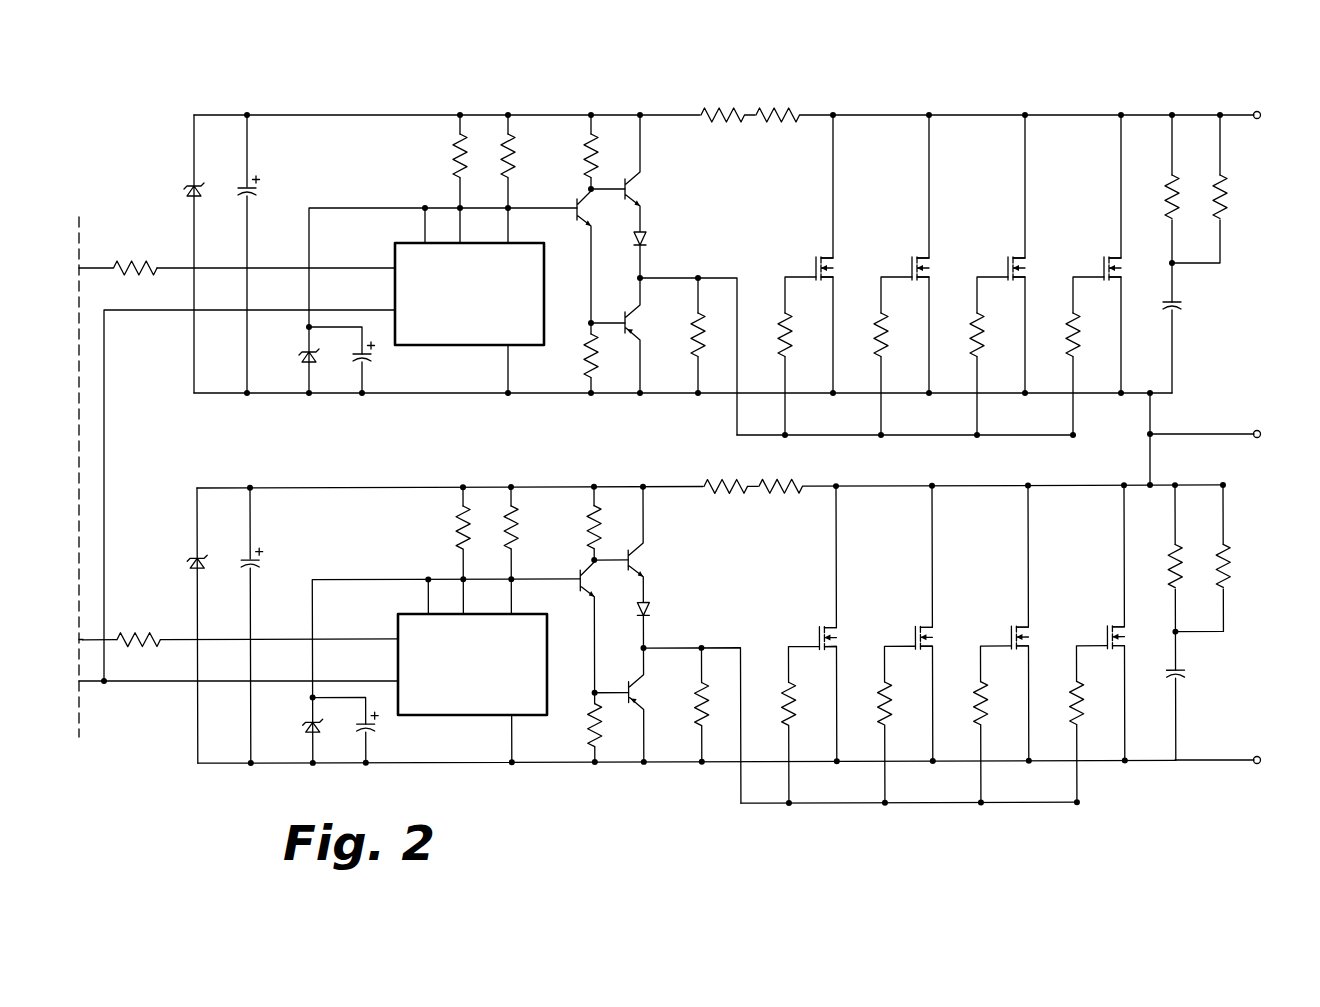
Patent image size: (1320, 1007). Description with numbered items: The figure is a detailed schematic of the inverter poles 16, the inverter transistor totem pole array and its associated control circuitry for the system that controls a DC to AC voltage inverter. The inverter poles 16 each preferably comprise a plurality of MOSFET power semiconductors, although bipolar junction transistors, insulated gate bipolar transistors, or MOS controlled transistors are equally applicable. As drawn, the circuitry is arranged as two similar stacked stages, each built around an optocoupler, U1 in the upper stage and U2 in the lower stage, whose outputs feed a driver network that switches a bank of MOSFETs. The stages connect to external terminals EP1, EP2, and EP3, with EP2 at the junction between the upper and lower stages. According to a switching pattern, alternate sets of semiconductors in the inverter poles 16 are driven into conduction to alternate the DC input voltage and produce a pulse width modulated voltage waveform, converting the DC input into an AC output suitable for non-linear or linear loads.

The inverter poles 16 is at (797, 90).
The optocoupler U1 (HCPL2601) U1 is at (469, 294).
The optocoupler U2 (HCPL2601) U2 is at (472, 664).
The terminal EP1 is at (1262, 115).
The terminal EP2 is at (1226, 434).
The terminal EP3 is at (1240, 760).